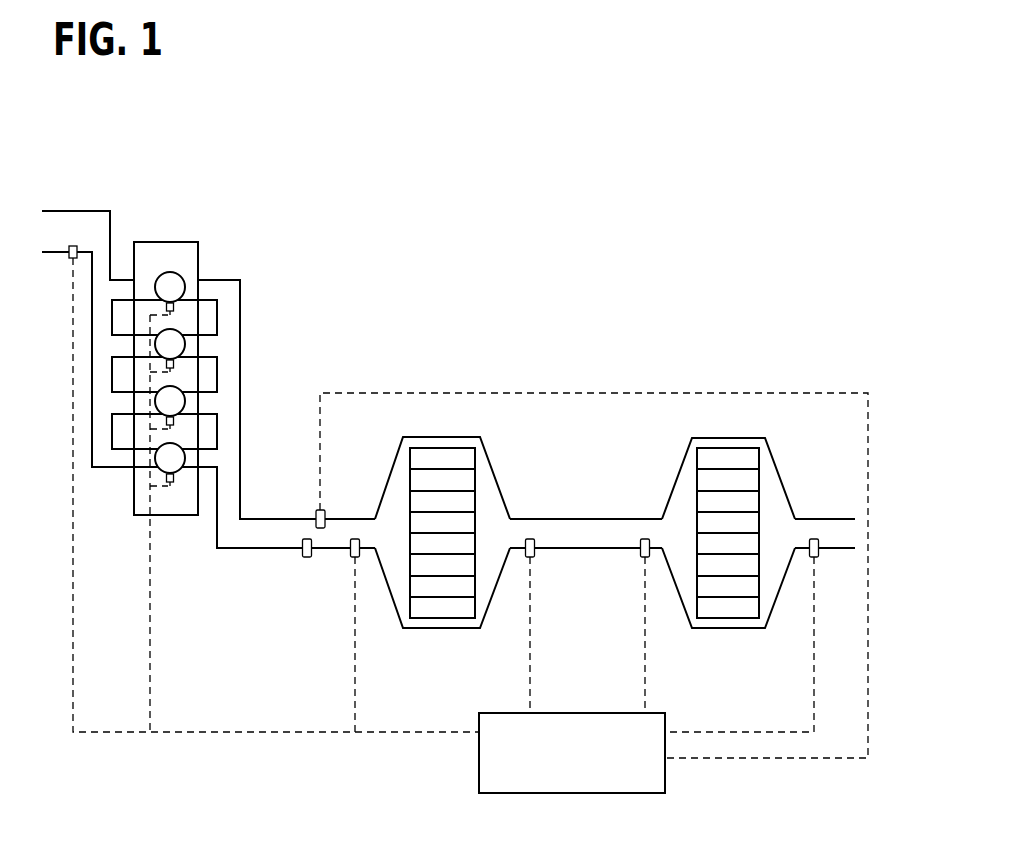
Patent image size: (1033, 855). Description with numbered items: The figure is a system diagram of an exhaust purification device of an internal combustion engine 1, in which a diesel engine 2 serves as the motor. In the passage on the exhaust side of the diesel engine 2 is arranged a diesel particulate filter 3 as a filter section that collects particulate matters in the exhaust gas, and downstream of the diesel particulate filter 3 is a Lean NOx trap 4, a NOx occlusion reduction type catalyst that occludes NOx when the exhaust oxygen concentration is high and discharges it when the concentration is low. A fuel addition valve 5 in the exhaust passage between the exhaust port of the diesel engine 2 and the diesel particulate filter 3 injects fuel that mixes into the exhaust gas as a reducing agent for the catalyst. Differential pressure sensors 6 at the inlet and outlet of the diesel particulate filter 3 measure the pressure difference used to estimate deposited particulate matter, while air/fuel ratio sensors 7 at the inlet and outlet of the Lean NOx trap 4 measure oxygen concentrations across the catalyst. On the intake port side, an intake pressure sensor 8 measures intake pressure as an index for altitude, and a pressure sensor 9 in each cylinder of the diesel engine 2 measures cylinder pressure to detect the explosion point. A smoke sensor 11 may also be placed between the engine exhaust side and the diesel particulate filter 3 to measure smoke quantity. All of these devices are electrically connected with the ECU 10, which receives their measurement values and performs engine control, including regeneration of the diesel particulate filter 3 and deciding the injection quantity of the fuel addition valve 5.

The internal combustion engine 1 is at (482, 312).
The diesel engine 2 is at (200, 258).
The diesel particulate filter 3 is at (476, 462).
The Lean NOx trap 4 is at (760, 462).
The fuel addition valve 5 is at (317, 511).
The differential pressure sensors 6 is at (353, 557).
The air/fuel ratio sensors 7 is at (643, 557).
The intake pressure sensor 8 is at (70, 258).
The pressure sensor 9 is at (174, 308).
The ECU 10 is at (479, 770).
The smoke sensor 11 is at (303, 557).